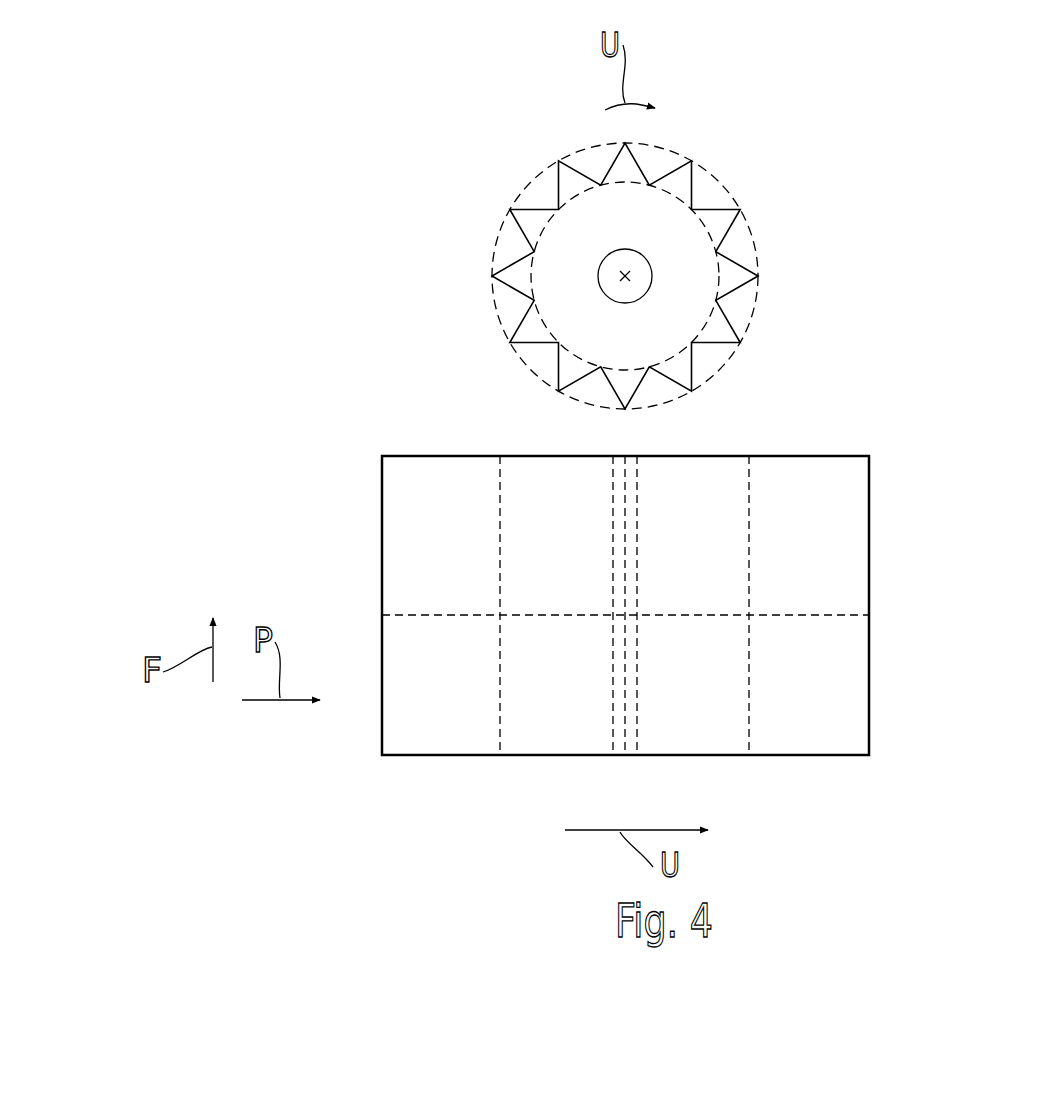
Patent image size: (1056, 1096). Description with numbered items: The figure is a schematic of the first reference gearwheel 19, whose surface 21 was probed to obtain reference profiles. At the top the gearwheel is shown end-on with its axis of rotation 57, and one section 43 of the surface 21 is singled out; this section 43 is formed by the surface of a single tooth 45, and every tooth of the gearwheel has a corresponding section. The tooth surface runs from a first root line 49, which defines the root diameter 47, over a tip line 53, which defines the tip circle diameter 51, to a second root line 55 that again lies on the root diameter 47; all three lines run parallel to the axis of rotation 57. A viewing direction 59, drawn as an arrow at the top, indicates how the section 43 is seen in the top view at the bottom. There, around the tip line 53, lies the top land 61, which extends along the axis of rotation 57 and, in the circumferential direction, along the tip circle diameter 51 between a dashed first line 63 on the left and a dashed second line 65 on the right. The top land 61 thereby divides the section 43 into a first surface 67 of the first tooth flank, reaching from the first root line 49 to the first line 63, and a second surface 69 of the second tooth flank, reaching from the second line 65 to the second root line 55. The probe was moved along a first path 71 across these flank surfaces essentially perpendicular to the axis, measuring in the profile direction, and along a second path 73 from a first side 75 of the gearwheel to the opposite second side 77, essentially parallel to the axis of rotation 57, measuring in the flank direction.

The first reference gearwheel 19 is at (718, 330).
The surface 21 is at (548, 185).
The section 43 is at (726, 140).
The tooth 45 is at (720, 223).
The root diameter 47 is at (497, 281).
The first root line 49 is at (693, 208).
The tip circle diameter 51 is at (494, 250).
The tip line 53 is at (740, 210).
The second root line 55 is at (718, 251).
The axis of rotation 57 is at (618, 277).
The viewing direction 59 is at (814, 165).
The top land 61 is at (620, 742).
The first line 63 is at (612, 730).
The second line 65 is at (638, 729).
The first surface 67 is at (397, 563).
The second surface 69 is at (828, 667).
The first path 71 is at (458, 617).
The second path 73 is at (498, 482).
The first side 75 is at (388, 795).
The second side 77 is at (378, 422).